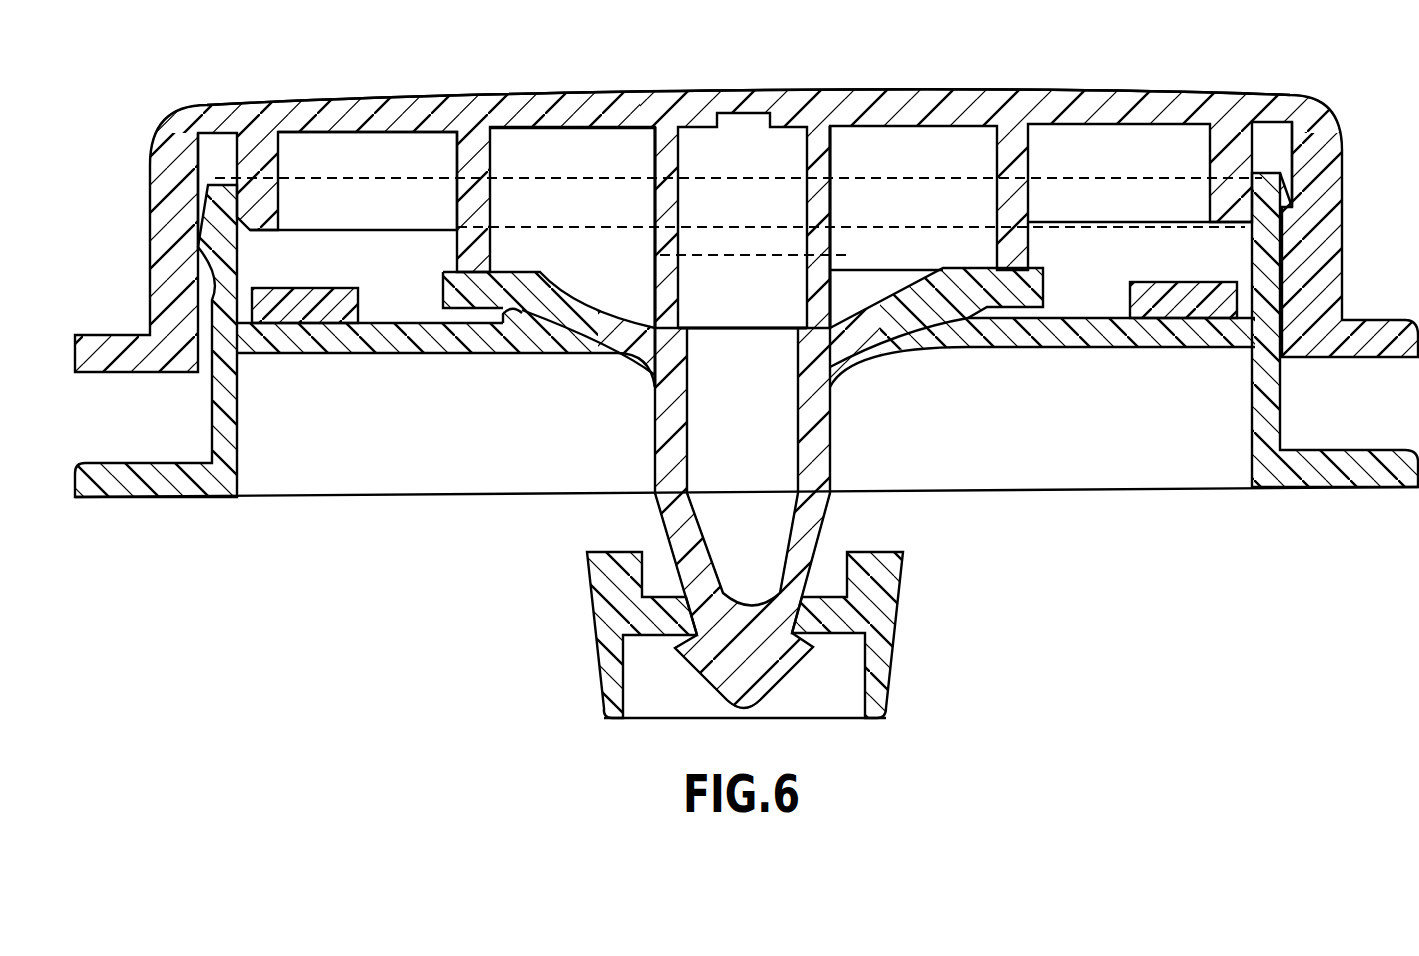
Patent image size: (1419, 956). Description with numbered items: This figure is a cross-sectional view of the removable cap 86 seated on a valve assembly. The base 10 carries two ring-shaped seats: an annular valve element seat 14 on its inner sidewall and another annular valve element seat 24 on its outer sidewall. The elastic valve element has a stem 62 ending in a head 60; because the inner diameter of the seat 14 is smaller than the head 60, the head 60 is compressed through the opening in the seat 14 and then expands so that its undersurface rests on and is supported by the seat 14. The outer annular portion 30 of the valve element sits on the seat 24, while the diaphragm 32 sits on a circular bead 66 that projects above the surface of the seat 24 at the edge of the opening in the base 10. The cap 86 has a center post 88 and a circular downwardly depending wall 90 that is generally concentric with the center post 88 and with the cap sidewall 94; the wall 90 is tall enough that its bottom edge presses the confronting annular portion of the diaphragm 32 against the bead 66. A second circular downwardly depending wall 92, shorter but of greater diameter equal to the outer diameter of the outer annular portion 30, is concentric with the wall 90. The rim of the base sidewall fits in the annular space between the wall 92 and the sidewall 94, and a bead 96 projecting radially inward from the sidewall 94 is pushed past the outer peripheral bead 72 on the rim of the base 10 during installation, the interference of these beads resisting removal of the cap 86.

The base 10 is at (1353, 488).
The annular valve element seat 14 is at (660, 637).
The annular valve element seat 24 is at (400, 343).
The outer annular portion 30 is at (296, 300).
The diaphragm 32 is at (577, 303).
The head 60 is at (787, 677).
The stem 62 is at (833, 453).
The circular bead 66 is at (545, 335).
The outer peripheral bead 72 is at (198, 235).
The removable cap 86 is at (963, 90).
The center post 88 is at (648, 310).
The circular downwardly depending wall 90 is at (493, 213).
The second circular downwardly depending wall 92 is at (282, 197).
The sidewall 94 is at (1343, 252).
The bead 96 is at (212, 292).